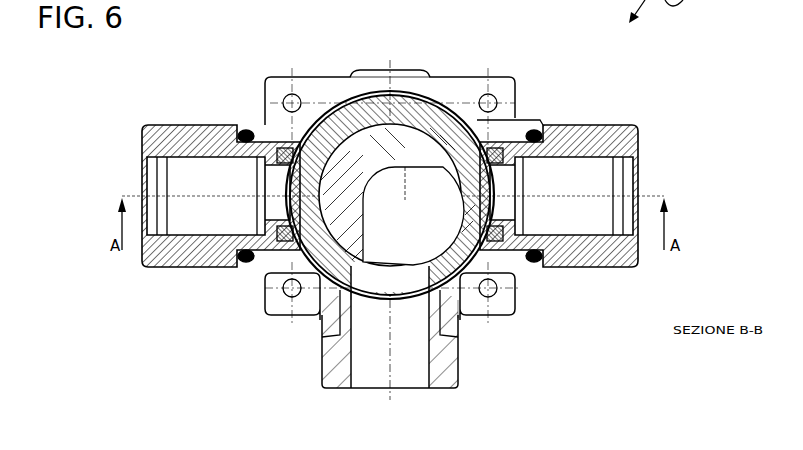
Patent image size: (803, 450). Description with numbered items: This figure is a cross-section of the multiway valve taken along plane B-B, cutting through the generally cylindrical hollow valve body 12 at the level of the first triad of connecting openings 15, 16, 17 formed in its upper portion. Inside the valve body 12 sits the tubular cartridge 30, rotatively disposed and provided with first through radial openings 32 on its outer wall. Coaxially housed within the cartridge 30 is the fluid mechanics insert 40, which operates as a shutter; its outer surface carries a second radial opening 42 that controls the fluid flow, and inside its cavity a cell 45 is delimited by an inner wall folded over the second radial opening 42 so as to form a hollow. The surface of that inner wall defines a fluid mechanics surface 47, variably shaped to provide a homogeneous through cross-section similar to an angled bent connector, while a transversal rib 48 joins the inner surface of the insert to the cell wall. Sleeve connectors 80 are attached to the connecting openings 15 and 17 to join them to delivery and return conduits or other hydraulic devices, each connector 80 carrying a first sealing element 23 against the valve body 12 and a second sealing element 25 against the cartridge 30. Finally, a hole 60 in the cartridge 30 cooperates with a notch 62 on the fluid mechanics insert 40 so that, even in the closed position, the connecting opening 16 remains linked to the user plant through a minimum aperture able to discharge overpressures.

The valve body 12 is at (393, 221).
The connecting opening 15 is at (185, 182).
The connecting opening 16 is at (400, 377).
The connecting opening 17 is at (605, 190).
The first sealing element 23 is at (537, 128).
The second sealing element 25 is at (276, 142).
The cartridge 30 is at (409, 98).
The first through radial opening 32 is at (501, 150).
The fluid mechanics insert 40 is at (378, 167).
The second radial opening 42 is at (462, 282).
The cell 45 is at (417, 210).
The fluid mechanics surface 47 is at (407, 252).
The rib 48 is at (360, 74).
The hole 60 is at (320, 328).
The notch 62 is at (340, 337).
The sleeve connector 80 is at (190, 125).